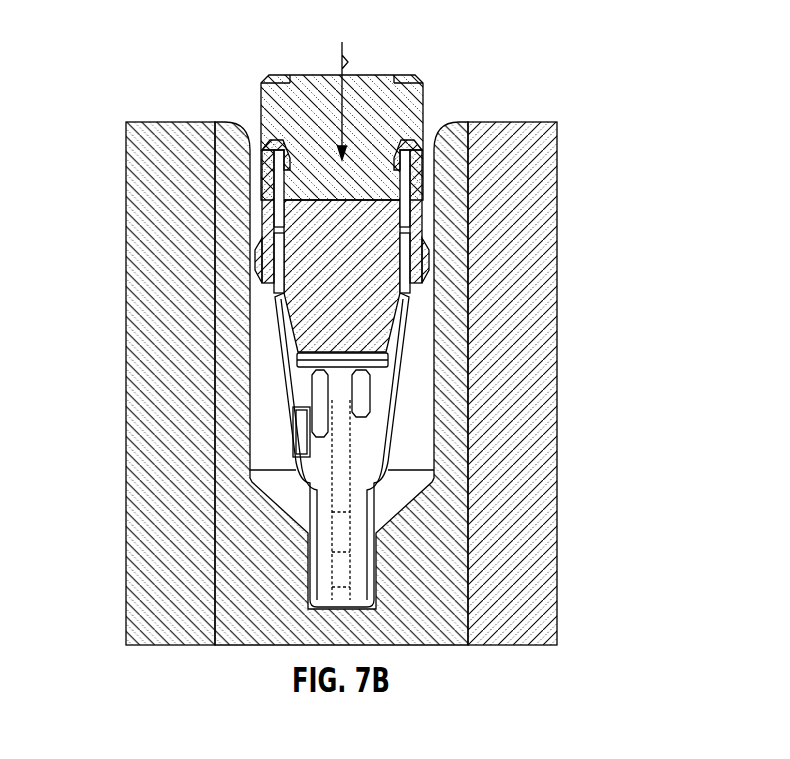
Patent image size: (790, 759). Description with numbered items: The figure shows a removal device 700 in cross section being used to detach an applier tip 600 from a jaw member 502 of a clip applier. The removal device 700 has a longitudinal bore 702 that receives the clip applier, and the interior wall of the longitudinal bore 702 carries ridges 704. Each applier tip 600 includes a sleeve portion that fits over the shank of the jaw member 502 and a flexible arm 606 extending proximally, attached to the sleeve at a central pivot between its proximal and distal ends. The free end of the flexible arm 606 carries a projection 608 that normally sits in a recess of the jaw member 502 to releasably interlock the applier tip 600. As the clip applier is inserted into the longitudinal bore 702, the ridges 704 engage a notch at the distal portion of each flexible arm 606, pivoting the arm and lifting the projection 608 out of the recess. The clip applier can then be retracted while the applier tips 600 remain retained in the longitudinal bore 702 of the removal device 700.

The jaw member 502 is at (370, 90).
The applier tip 600 is at (363, 338).
The flexible arm 606 is at (270, 205).
The projection 608 is at (272, 163).
The removal device 700 is at (145, 408).
The longitudinal bore 702 is at (420, 350).
The ridge 704 is at (257, 255).